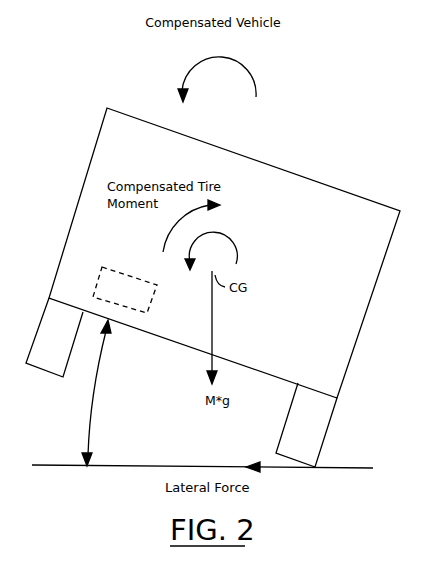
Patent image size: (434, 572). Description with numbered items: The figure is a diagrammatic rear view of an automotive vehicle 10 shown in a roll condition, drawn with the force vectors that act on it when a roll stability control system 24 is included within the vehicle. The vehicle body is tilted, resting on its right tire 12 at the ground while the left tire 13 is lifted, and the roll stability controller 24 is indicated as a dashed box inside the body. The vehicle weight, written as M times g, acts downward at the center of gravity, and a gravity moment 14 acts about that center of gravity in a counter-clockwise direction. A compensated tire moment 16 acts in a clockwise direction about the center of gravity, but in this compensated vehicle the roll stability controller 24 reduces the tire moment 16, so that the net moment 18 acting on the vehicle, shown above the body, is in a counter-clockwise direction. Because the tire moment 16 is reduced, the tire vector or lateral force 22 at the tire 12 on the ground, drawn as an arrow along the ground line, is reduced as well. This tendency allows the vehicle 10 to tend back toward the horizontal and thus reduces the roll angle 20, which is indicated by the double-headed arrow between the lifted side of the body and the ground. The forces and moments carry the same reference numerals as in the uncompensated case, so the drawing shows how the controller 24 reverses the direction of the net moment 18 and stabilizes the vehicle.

The automotive vehicle 10 is at (247, 157).
The right tire 12 is at (328, 428).
The left tire 13 is at (42, 372).
The gravity moment 14 is at (237, 263).
The tire moment 16 is at (175, 222).
The net moment 18 is at (255, 82).
The roll angle 20 is at (93, 398).
The lateral force 22 is at (282, 466).
The roll stability control system 24 is at (128, 270).